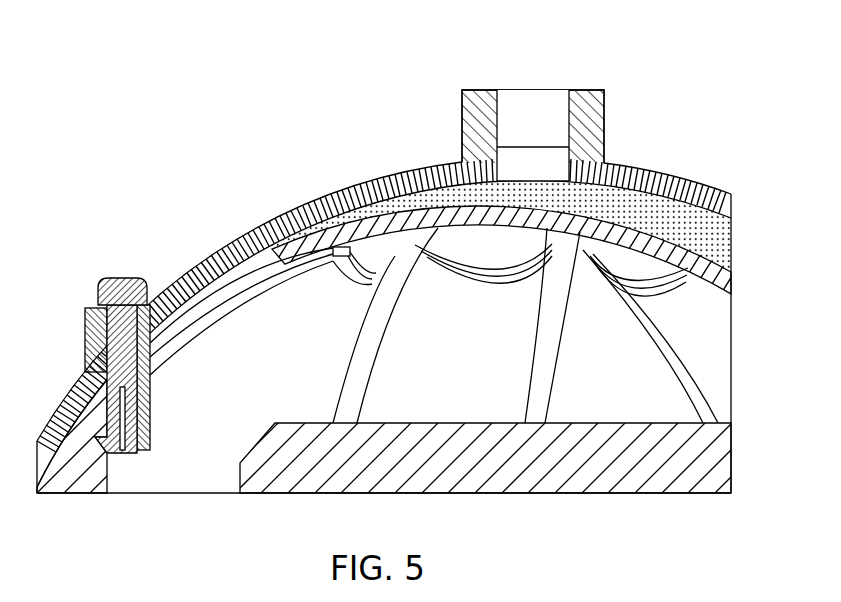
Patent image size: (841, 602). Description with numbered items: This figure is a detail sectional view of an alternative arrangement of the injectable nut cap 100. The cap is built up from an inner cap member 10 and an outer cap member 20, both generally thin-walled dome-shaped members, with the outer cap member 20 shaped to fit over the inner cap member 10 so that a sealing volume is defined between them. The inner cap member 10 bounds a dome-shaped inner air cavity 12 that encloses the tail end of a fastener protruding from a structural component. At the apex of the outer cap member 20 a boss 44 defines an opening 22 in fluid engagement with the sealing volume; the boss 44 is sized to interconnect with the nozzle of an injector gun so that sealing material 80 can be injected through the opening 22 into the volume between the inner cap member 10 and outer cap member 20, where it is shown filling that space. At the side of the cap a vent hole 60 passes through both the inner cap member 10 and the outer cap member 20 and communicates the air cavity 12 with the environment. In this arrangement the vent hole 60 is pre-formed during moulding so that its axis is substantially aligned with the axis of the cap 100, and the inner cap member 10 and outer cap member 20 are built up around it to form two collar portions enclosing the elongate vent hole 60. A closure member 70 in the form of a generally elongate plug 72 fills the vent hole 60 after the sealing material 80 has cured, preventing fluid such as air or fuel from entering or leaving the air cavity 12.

The injectable nut cap 100 is at (298, 115).
The outer cap member 20 is at (285, 214).
The inner cap member 10 is at (247, 272).
The sealing material 80 is at (719, 238).
The boss 44 is at (462, 120).
The opening 22 is at (534, 180).
The inner air cavity 12 is at (477, 359).
The closure member 70 is at (85, 334).
The vent hole 60 is at (92, 342).
The plug 72 is at (121, 341).